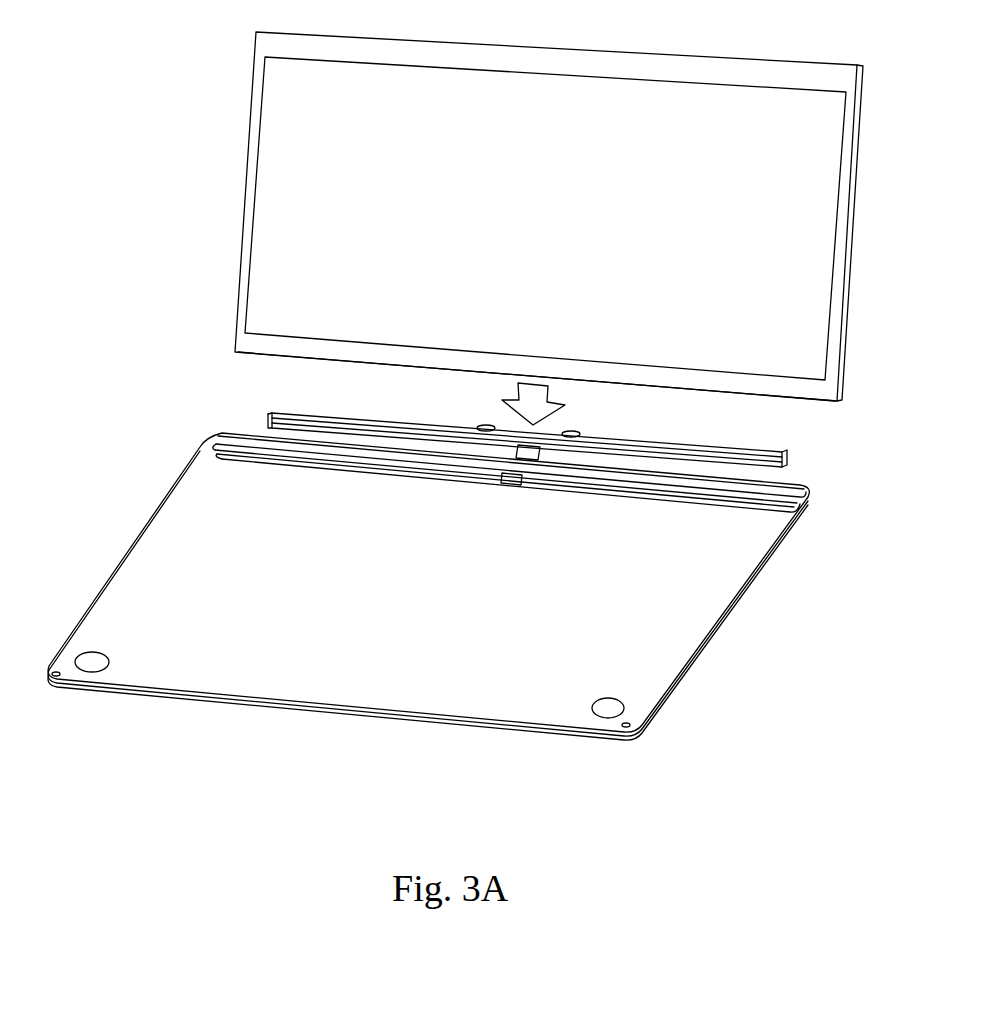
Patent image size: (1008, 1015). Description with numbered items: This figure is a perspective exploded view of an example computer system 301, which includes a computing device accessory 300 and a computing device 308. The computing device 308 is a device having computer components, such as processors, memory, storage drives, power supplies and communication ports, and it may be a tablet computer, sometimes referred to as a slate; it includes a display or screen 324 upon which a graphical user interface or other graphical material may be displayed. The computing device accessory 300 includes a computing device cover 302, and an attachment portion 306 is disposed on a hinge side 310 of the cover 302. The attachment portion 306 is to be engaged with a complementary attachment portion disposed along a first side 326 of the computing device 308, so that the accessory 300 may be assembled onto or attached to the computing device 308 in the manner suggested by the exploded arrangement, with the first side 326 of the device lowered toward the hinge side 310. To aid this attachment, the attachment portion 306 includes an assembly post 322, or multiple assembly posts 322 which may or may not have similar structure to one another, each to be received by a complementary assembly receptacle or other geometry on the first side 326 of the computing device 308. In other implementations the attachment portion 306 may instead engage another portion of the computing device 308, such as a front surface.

The computing device accessory 300 is at (98, 466).
The computer system 301 is at (137, 132).
The computing device cover 302 is at (178, 538).
The attachment portion 306 is at (678, 436).
The computing device 308 is at (849, 316).
The hinge side 310 is at (755, 517).
The assembly post 322 is at (483, 425).
The display or screen 324 is at (545, 218).
The first side 326 is at (268, 360).